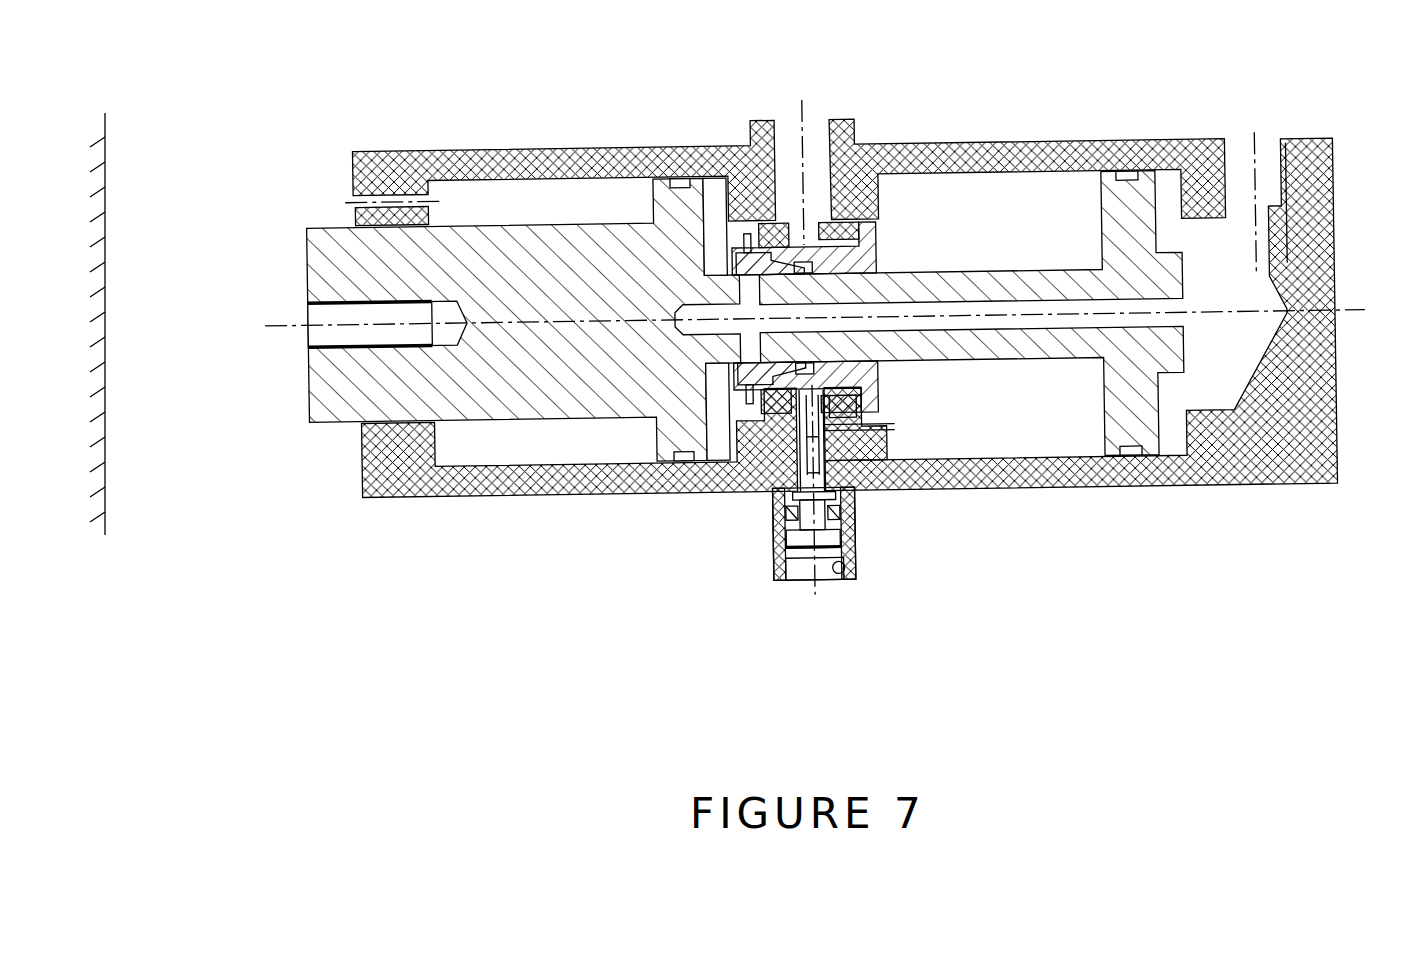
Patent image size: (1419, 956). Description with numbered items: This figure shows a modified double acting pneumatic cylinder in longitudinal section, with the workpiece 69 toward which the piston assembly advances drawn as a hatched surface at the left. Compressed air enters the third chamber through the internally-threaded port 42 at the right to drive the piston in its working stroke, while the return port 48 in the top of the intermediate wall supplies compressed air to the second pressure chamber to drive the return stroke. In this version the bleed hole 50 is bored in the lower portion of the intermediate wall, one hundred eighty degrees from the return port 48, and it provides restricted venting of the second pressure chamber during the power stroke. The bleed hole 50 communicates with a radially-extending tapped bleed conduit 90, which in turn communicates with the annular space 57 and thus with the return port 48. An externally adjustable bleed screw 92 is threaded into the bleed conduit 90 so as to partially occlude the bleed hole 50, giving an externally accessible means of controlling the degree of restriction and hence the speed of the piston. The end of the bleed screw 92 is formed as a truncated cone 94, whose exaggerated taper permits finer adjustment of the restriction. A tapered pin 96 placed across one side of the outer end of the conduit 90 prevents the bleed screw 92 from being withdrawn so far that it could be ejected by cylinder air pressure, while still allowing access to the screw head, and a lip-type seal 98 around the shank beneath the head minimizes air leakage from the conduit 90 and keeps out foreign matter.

The workpiece 69 is at (110, 166).
The return port 48 is at (812, 106).
The internally-threaded port 42 is at (1264, 124).
The bleed hole 50 is at (895, 421).
The bleed conduit 90 is at (767, 493).
The annular space 57 is at (857, 440).
The truncated cone 94 is at (781, 514).
The lip-type seal 98 is at (773, 530).
The bleed screw 92 is at (842, 567).
The tapered pin 96 is at (847, 583).